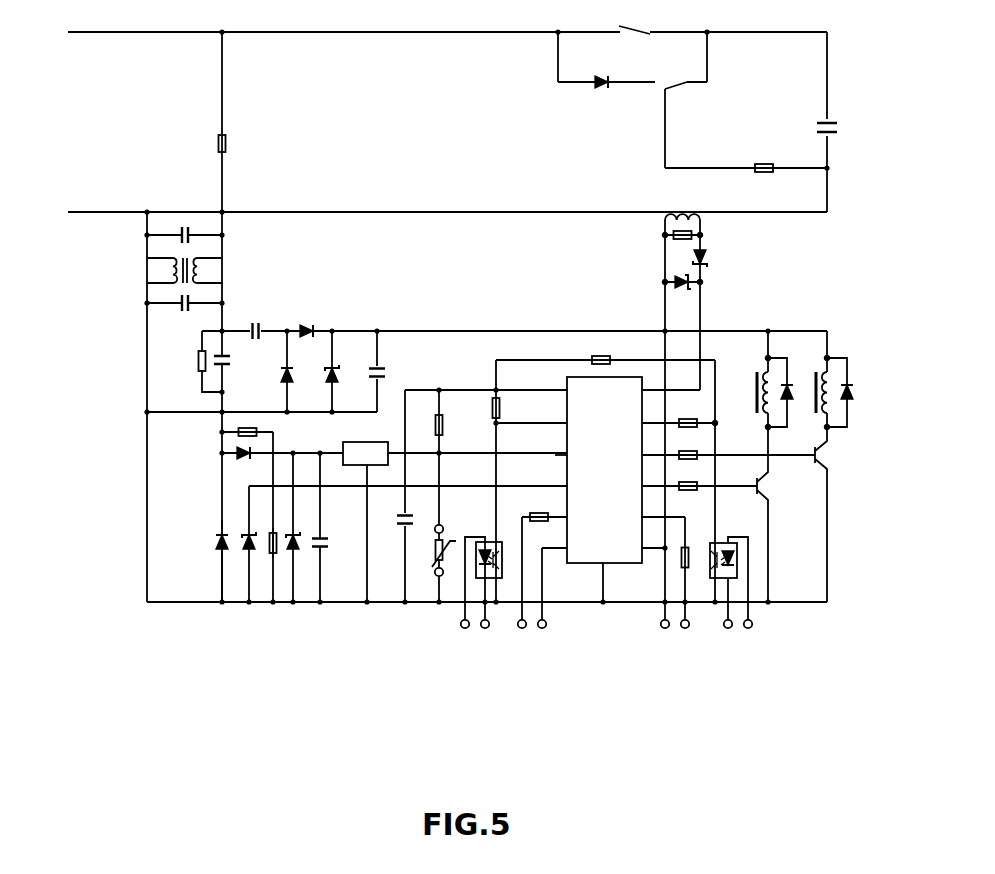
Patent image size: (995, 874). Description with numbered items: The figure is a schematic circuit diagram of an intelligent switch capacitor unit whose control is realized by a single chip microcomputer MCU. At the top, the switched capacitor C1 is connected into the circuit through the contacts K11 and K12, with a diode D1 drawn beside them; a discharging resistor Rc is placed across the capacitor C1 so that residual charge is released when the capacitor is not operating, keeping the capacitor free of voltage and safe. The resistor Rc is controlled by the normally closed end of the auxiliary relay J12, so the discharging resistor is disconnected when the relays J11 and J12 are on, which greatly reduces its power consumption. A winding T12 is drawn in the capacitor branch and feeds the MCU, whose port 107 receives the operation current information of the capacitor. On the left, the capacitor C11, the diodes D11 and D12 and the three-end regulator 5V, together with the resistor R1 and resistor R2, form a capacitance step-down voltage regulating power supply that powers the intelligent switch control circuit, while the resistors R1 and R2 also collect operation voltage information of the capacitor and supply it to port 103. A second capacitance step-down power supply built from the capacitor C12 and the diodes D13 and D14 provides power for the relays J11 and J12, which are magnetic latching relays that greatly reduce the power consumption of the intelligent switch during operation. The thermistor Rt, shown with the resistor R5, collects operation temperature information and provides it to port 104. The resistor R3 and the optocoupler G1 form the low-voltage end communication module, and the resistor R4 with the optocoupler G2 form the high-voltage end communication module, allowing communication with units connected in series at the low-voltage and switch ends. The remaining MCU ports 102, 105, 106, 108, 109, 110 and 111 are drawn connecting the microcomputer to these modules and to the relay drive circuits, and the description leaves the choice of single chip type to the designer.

The main contact of contactor K1 K11 is at (629, 20).
The auxiliary contact of contactor K1 K12 is at (632, 115).
The diode D1 is at (599, 93).
The discharging resistor Rc is at (746, 159).
The capacitor C1 is at (838, 122).
The current transformer winding T12 is at (684, 246).
The capacitor C12 is at (255, 322).
The diode D14 is at (309, 321).
The capacitor C11 is at (227, 361).
The diode D13 is at (277, 371).
The resistor R1 is at (247, 424).
The diode D12 is at (282, 463).
The three-end regulator 5V is at (365, 453).
The diode D11 is at (206, 561).
The resistor R2 is at (281, 536).
The resistor R5 is at (428, 457).
The thermistor Rt is at (434, 563).
The optocoupler G1 is at (481, 573).
The resistor R3 is at (542, 561).
The single chip microcomputer MCU is at (604, 470).
The MCU pin 102 is at (577, 517).
The port 103 is at (577, 486).
The port 104 is at (577, 455).
The MCU pin 105 is at (577, 423).
The MCU pin 106 is at (577, 391).
The port 107 is at (658, 391).
The MCU pin 108 is at (667, 423).
The MCU pin 109 is at (715, 455).
The MCU pin 110 is at (686, 486).
The MCU pin 111 is at (650, 526).
The resistor R4 is at (696, 577).
The optocoupler G2 is at (731, 572).
The relay J11 is at (769, 380).
The auxiliary relay J12 is at (828, 380).